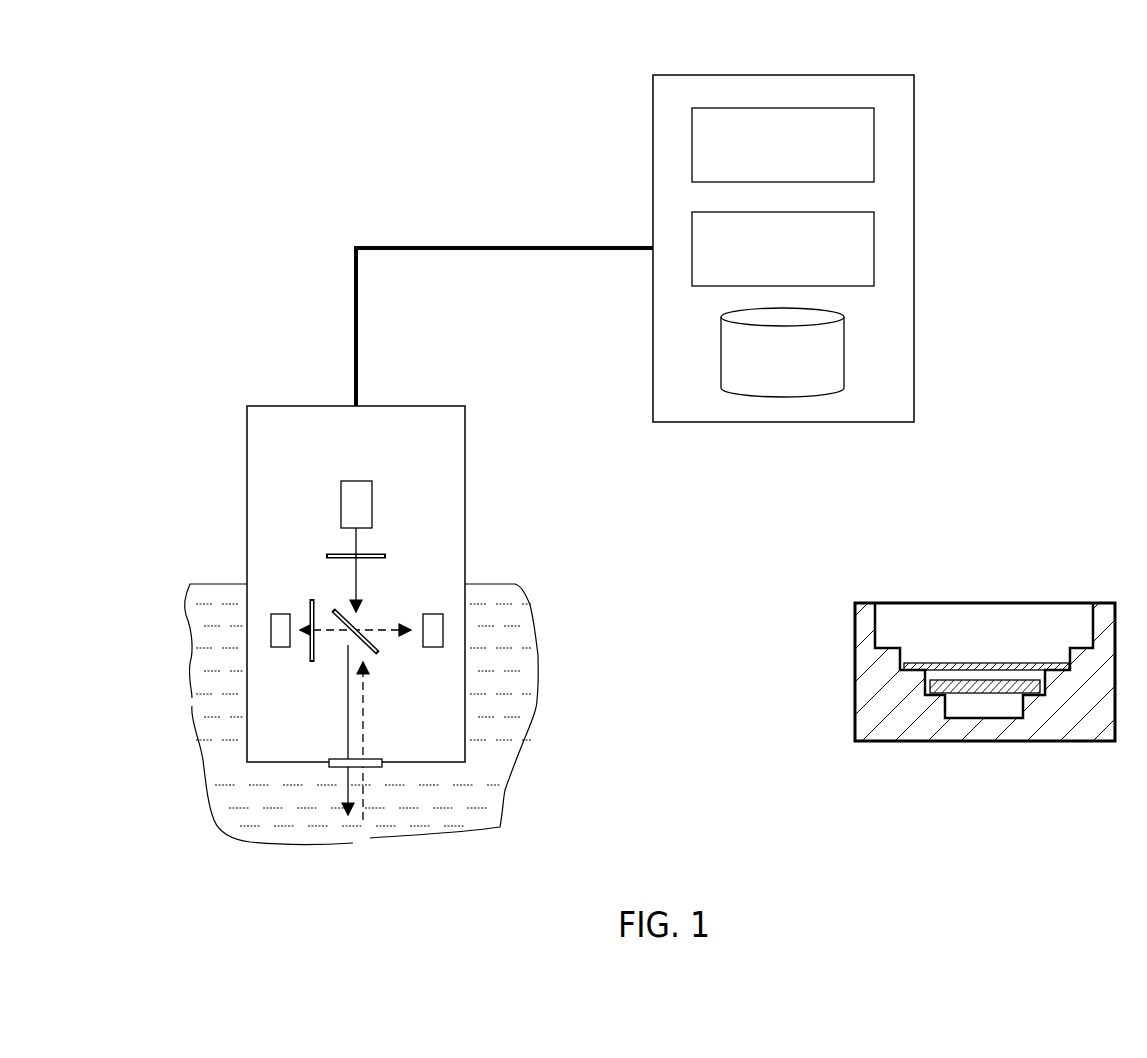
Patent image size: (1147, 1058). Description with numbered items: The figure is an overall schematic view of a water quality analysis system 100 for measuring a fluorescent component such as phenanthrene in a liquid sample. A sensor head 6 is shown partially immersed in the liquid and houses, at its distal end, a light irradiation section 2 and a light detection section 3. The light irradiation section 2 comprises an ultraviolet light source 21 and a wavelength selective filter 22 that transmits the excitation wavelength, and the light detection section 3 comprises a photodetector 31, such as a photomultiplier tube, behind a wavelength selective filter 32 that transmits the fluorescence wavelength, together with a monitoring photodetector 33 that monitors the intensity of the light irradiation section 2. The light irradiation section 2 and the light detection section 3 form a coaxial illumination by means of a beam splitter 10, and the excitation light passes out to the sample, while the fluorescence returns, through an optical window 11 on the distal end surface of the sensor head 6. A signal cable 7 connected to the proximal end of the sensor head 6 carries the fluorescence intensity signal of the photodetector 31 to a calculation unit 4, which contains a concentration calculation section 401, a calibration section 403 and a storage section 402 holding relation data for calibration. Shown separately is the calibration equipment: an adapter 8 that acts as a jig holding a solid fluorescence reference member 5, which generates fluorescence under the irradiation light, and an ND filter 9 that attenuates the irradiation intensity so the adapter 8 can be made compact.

The water quality analysis system 100 is at (368, 122).
The calculation unit 4 is at (783, 74).
The concentration calculation section 401 is at (875, 145).
The calibration section 403 is at (875, 250).
The storage section 402 is at (844, 352).
The signal cable 7 is at (475, 247).
The sensor head 6 is at (465, 475).
The light irradiation section 2 is at (310, 500).
The ultraviolet light source 21 is at (353, 481).
The wavelength selective filter 22 is at (335, 555).
The light detection section 3 is at (286, 599).
The photodetector 31 is at (268, 630).
The wavelength selective filter 32 is at (312, 660).
The monitoring photodetector 33 is at (433, 647).
The beam splitter 10 is at (358, 623).
The optical window 11 is at (340, 758).
The adapter 8 is at (855, 663).
The ND filter 9 is at (988, 663).
The fluorescence reference member 5 is at (983, 693).